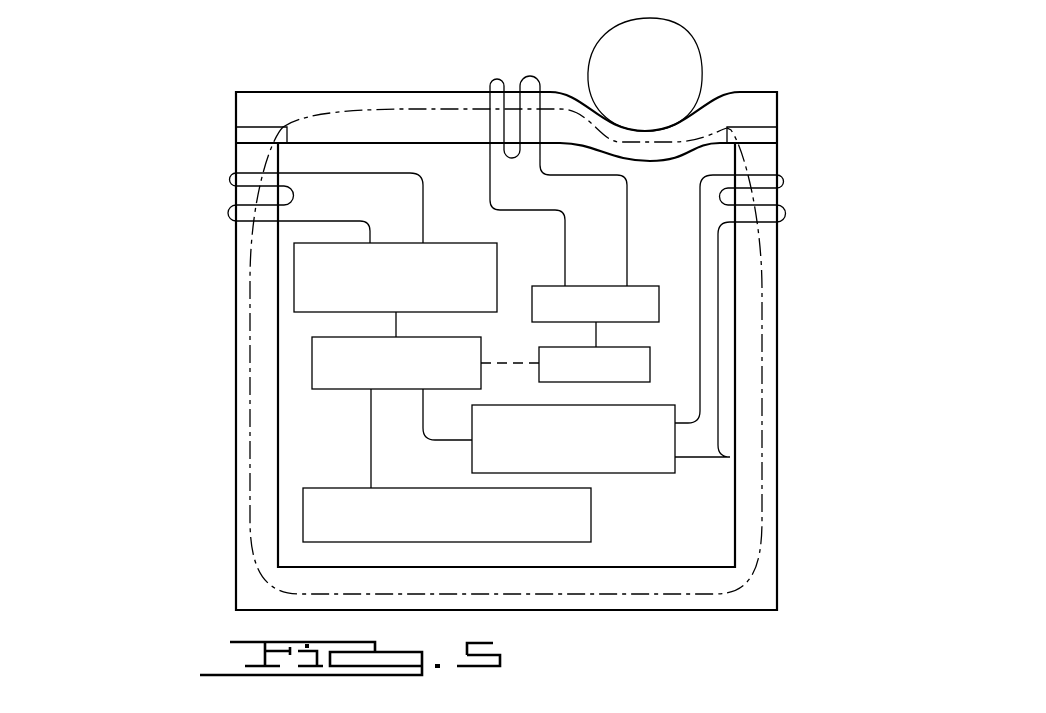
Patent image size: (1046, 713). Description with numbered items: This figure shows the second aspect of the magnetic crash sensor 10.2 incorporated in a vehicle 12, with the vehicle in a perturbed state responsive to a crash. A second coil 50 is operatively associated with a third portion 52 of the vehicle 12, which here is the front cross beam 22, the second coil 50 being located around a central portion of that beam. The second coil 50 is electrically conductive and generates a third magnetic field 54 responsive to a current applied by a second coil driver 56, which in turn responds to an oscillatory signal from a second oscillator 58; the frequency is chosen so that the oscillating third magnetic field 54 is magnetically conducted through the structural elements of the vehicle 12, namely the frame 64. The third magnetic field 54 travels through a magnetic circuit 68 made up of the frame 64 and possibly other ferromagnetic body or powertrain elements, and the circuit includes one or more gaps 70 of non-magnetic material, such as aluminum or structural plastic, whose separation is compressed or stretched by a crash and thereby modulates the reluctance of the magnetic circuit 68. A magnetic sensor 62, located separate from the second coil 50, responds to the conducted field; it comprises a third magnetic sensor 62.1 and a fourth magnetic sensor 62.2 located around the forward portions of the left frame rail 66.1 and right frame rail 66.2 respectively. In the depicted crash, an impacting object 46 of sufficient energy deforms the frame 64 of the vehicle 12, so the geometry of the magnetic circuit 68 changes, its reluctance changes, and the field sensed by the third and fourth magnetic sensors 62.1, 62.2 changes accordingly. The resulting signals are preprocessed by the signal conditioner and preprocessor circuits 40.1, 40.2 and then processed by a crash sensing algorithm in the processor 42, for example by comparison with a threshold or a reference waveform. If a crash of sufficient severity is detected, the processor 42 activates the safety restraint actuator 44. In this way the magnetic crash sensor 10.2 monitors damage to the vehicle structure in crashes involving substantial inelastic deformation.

The magnetic crash sensor 10.2 is at (208, 72).
The vehicle 12 is at (171, 87).
The front cross beam 22 is at (413, 143).
The signal conditioner and preprocessor circuit 40.1 is at (497, 277).
The signal conditioner and preprocessor circuit 40.2 is at (617, 473).
The processor 42 is at (333, 387).
The safety restraint actuator 44 is at (445, 498).
The impacting object 46 is at (683, 65).
The second coil 50 is at (497, 86).
The third portion 52 is at (470, 153).
The third magnetic field 54 is at (380, 112).
The second coil driver 56 is at (652, 288).
The second oscillator 58 is at (650, 367).
The magnetic sensor 62 is at (503, 315).
The third magnetic sensor 62.1 is at (227, 207).
The fourth magnetic sensor 62.2 is at (790, 212).
The frame 64 is at (298, 94).
The left frame rail 66.1 is at (236, 344).
The right frame rail 66.2 is at (778, 293).
The magnetic circuit 68 is at (810, 93).
The gap 70 is at (243, 133).